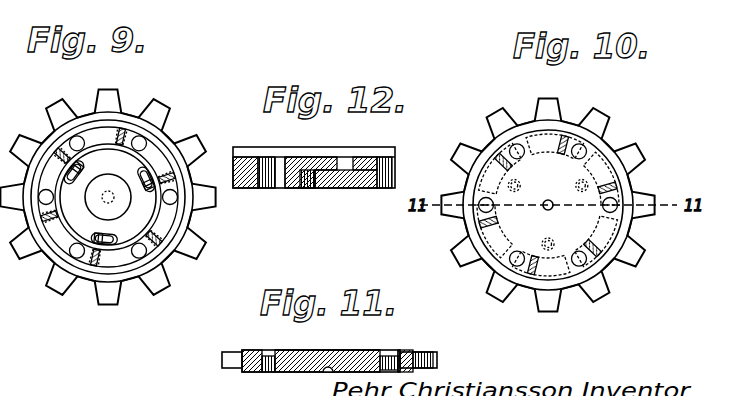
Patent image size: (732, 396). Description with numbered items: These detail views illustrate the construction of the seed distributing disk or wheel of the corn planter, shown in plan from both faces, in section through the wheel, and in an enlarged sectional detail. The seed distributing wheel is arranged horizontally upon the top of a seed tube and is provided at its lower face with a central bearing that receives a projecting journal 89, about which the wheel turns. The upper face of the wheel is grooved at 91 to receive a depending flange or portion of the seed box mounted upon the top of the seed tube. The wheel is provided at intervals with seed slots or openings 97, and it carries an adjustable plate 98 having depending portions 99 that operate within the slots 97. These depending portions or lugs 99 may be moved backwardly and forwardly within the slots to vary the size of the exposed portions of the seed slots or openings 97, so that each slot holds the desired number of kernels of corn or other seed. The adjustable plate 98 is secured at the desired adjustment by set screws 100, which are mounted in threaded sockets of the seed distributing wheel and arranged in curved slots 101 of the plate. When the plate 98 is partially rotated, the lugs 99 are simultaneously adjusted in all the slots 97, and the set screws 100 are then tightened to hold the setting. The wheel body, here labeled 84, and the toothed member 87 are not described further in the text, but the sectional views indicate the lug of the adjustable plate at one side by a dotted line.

In FIG. 9, the ratchet wheel 84 is at (107, 196).
In FIG. 10, the ratchet wheel 84 is at (547, 200).
In FIG. 12, the ratchet wheel 84 is at (314, 158).
In FIG. 11, the ratchet wheel 84 is at (337, 350).
In FIG. 11, the shaft 87 is at (222, 360).
In FIG. 9, the projecting journal 89 is at (108, 200).
In FIG. 9, the groove 91 is at (188, 220).
In FIG. 11, the groove 91 is at (405, 352).
In FIG. 9, the seed slots or openings 97 is at (78, 252).
In FIG. 10, the seed slots or openings 97 is at (485, 205).
In FIG. 12, the seed slots or openings 97 is at (282, 186).
In FIG. 11, the seed slots or openings 97 is at (393, 360).
In FIG. 9, the adjustable plate 98 is at (108, 197).
In FIG. 12, the adjustable plate 98 is at (305, 160).
In FIG. 11, the adjustable plate 98 is at (377, 352).
In FIG. 10, the depending portions 99 is at (573, 143).
In FIG. 12, the depending portions 99 is at (298, 186).
In FIG. 9, the set screws 100 is at (140, 172).
In FIG. 10, the set screws 100 is at (575, 185).
In FIG. 9, the curved slots 101 is at (147, 193).